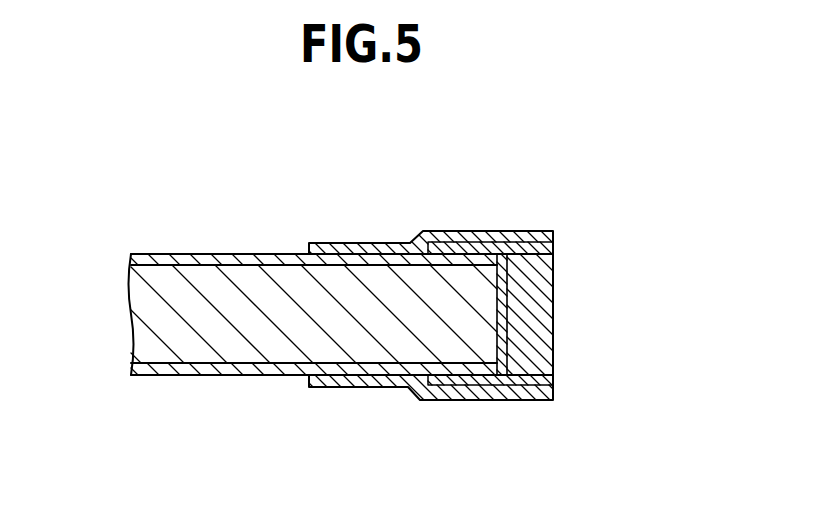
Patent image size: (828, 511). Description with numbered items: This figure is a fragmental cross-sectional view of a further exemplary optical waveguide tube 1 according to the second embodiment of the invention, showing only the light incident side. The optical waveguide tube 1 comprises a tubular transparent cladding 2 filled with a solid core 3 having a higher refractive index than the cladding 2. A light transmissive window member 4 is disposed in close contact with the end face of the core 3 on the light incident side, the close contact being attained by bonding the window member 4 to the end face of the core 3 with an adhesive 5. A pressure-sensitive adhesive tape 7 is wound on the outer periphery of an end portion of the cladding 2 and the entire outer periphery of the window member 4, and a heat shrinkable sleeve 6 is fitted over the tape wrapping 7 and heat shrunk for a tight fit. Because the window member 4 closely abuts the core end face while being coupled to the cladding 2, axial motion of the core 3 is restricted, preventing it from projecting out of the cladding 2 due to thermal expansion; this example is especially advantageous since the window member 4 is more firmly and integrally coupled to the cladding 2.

The optical waveguide tube 1 is at (203, 233).
The tubular transparent cladding 2 is at (278, 254).
The solid core 3 is at (259, 345).
The light transmissive window member 4 is at (542, 302).
The adhesive 5 is at (503, 349).
The heat shrinkable sleeve 6 is at (500, 393).
The pressure-sensitive adhesive tape 7 is at (488, 250).